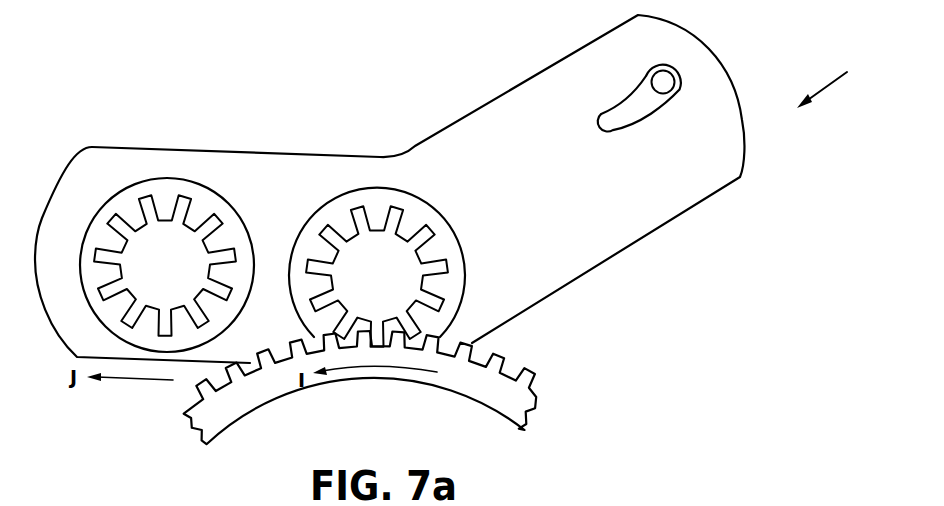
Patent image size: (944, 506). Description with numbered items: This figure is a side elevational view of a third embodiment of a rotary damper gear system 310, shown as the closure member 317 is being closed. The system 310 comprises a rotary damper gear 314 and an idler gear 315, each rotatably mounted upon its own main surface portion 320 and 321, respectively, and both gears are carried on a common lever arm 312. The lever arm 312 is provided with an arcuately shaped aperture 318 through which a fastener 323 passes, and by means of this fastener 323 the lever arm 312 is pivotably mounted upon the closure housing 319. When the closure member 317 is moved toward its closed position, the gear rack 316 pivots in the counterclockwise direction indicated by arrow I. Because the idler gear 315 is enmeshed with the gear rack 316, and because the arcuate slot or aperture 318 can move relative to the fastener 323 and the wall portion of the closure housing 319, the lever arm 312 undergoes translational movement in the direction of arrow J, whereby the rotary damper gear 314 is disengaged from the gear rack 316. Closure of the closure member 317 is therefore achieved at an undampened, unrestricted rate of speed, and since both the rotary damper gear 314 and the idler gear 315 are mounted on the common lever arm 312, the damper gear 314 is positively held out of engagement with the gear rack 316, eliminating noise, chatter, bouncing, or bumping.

The rotary damper gear system 310 is at (818, 500).
The lever arm 312 is at (540, 292).
The rotary damper gear 314 is at (163, 227).
The idler gear 315 is at (382, 242).
The gear rack 316 is at (480, 398).
The closure member 317 is at (374, 435).
The arcuately shaped aperture 318 is at (611, 113).
The closure housing 319 is at (684, 273).
The main surface portion 320 is at (129, 196).
The main surface portion 321 is at (340, 207).
The fastener 323 is at (670, 82).